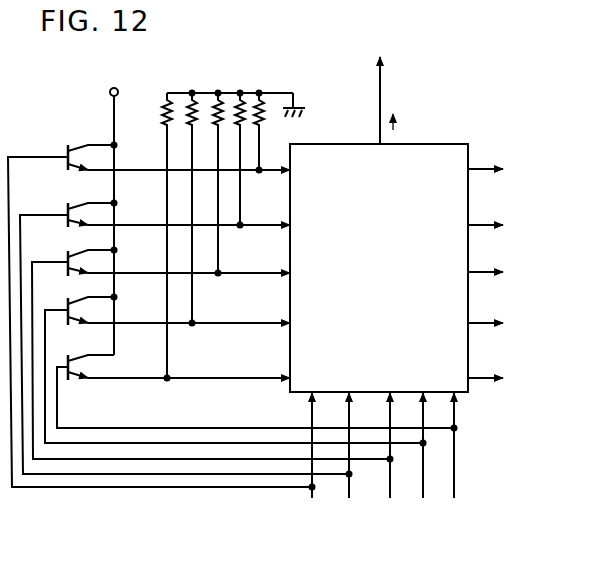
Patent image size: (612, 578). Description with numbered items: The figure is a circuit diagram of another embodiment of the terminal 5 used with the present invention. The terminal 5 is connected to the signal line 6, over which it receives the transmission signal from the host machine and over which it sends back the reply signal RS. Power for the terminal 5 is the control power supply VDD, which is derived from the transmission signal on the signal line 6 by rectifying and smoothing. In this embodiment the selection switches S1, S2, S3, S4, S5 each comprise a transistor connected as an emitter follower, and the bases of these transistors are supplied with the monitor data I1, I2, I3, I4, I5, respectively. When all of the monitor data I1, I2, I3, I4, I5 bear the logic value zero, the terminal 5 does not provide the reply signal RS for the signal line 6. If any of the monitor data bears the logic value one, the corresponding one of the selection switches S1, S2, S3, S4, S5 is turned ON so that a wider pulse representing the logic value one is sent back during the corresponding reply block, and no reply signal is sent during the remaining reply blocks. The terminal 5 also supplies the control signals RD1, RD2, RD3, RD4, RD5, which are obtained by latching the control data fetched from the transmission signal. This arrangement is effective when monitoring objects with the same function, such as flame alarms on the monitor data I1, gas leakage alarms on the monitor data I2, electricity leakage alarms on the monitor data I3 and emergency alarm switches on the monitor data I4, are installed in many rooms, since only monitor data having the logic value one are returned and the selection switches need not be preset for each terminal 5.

The terminal 5 is at (506, 95).
The signal line 6 is at (381, 90).
The selection switch S1 is at (160, 314).
The selection switch S2 is at (184, 335).
The selection switch S3 is at (211, 351).
The selection switch S4 is at (230, 366).
The selection switch S5 is at (250, 385).
The monitor data I1 is at (310, 463).
The monitor data I2 is at (348, 463).
The monitor data I3 is at (390, 463).
The monitor data I4 is at (423, 463).
The monitor data I5 is at (455, 463).
The control signal RD1 is at (509, 169).
The control signal RD2 is at (509, 225).
The control signal RD3 is at (509, 272).
The control signal RD4 is at (509, 323).
The control signal RD5 is at (509, 378).
The reply signal RS is at (409, 122).
The control power supply VDD is at (116, 209).